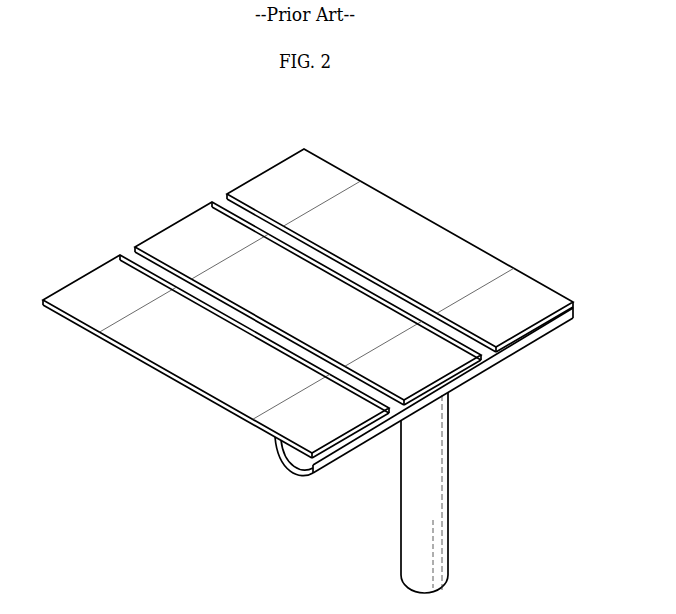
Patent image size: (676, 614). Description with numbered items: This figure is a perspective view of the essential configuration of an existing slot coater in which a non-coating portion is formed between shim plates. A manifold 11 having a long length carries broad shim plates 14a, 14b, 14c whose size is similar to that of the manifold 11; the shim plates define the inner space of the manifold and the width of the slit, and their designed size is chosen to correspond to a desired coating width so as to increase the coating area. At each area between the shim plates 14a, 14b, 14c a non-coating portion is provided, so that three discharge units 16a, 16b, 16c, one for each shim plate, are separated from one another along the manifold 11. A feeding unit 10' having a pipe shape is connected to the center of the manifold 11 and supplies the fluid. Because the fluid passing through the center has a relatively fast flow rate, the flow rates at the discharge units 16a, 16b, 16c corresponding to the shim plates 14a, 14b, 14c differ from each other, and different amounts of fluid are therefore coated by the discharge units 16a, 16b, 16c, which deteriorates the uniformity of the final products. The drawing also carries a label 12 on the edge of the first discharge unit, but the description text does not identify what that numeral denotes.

The feeding unit 10' is at (401, 493).
The manifold 11 is at (296, 468).
The module frame 12 is at (187, 388).
The shim plate 14a is at (347, 428).
The shim plate 14b is at (448, 363).
The shim plate 14c is at (513, 323).
The discharge unit 16a is at (72, 250).
The discharge unit 16b is at (163, 197).
The discharge unit 16c is at (253, 144).